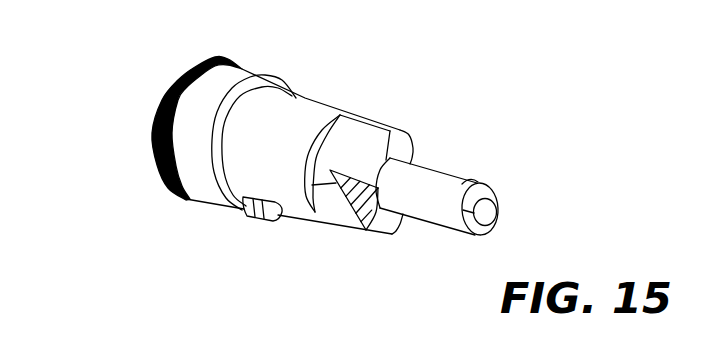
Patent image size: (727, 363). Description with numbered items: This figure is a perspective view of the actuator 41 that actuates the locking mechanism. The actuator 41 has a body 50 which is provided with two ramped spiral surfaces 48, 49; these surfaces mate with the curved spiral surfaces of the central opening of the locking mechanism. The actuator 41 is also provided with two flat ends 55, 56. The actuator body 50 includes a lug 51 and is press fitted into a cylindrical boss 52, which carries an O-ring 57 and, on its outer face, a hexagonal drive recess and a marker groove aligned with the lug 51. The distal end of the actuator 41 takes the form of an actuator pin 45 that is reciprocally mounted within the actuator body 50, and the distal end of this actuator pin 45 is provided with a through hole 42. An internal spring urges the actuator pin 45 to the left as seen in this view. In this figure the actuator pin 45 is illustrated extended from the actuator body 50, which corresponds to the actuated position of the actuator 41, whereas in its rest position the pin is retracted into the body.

The actuator 41 is at (120, 160).
The through hole 42 is at (480, 175).
The actuator pin 45 is at (432, 203).
The ramped spiral surface 48 is at (357, 213).
The ramped spiral surface 49 is at (416, 138).
The body 50 is at (308, 118).
The lug 51 is at (259, 216).
The cylindrical boss 52 is at (197, 186).
The flat end 55 is at (400, 143).
The flat end 56 is at (384, 233).
The O-ring 57 is at (173, 88).